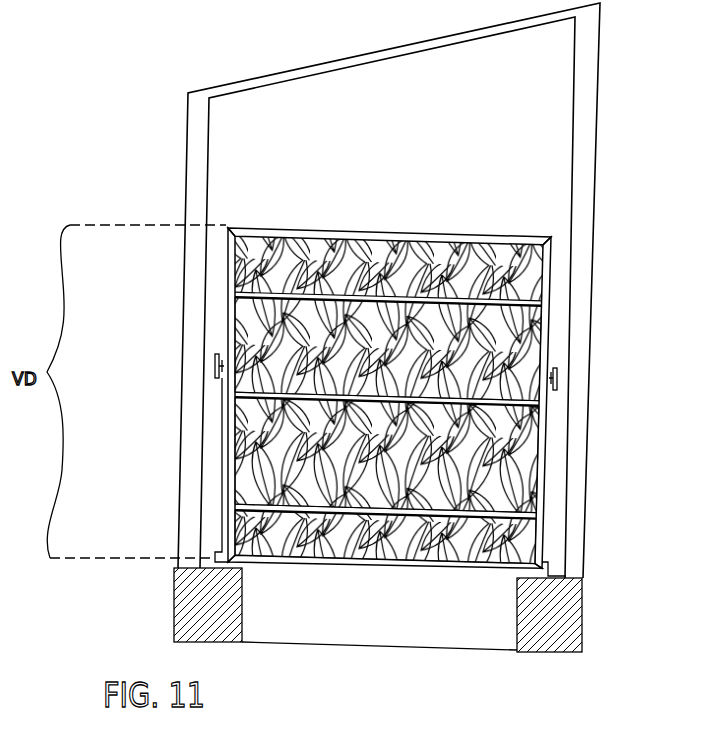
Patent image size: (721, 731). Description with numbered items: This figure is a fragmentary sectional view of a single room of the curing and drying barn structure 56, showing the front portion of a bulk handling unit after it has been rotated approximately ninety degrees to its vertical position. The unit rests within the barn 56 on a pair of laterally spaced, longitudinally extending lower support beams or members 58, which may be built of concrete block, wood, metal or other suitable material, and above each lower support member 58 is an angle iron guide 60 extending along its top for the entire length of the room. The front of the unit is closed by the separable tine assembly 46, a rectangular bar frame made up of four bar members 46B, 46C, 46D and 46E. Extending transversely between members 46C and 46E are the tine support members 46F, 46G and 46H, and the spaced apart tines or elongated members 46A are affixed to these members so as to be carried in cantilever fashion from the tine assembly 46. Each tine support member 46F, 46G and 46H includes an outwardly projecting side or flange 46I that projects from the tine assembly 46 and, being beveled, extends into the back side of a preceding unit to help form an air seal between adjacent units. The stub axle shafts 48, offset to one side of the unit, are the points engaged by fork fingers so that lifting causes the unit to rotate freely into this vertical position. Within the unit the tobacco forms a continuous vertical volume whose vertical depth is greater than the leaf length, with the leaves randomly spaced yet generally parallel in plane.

The curing and drying barn structure 56 is at (165, 138).
The separable tine assembly 46 is at (388, 388).
The tines or elongated members 46A is at (507, 238).
The bar member 46B is at (350, 566).
The bar member 46C is at (548, 455).
The bar member 46D is at (365, 233).
The bar member 46E is at (229, 452).
The tine support member 46F is at (548, 292).
The tine support member 46G is at (545, 397).
The tine support member 46H is at (550, 505).
The outwardly projecting side or flange 46I is at (238, 286).
The stub axle shafts 48 is at (215, 362).
The lower support beams or members 58 is at (215, 628).
The angle iron guide 60 is at (213, 562).